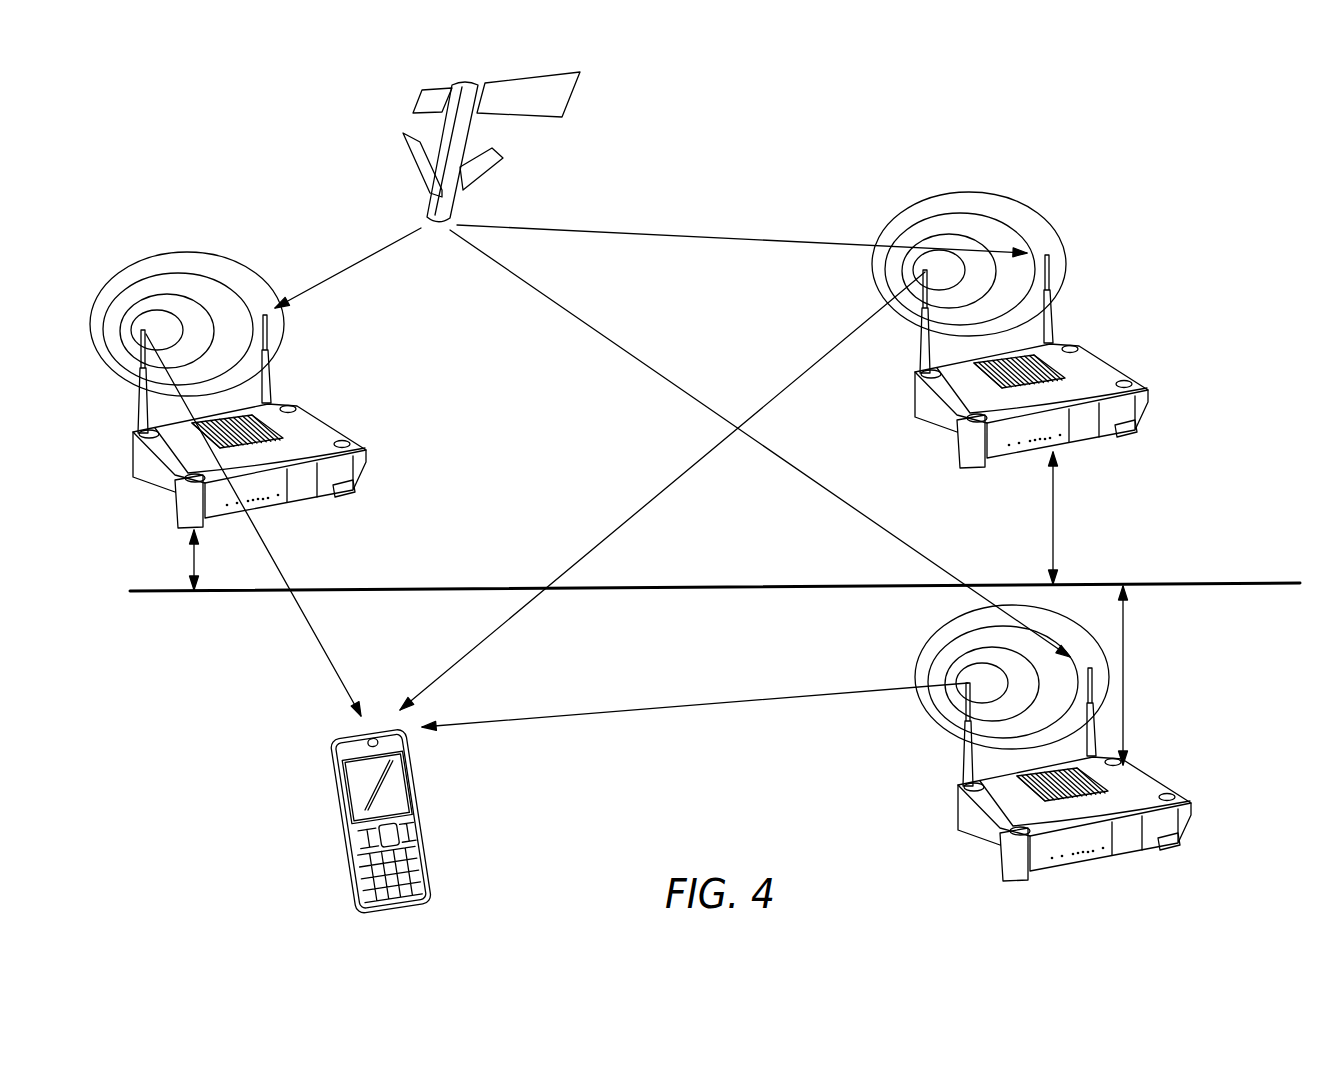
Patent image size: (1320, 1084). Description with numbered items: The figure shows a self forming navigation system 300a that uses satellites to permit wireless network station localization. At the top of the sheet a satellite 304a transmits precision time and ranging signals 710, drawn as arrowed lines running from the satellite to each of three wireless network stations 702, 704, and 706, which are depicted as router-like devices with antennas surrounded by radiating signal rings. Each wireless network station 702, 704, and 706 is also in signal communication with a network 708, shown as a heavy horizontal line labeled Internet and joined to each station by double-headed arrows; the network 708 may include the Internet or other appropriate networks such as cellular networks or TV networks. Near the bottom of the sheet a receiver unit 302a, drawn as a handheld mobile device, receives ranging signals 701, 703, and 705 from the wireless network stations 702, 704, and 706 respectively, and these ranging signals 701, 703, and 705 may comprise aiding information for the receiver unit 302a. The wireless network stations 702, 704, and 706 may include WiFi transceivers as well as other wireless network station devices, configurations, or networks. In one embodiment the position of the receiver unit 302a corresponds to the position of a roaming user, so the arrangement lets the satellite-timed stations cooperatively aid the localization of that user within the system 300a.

The self forming navigation system 300a is at (247, 172).
The satellite 304a is at (576, 92).
The receiver unit 302a is at (418, 788).
The wireless network station 702 is at (305, 502).
The wireless network station 704 is at (1085, 438).
The wireless network station 706 is at (1128, 848).
The network 708 is at (1268, 586).
The ranging signal 701 is at (313, 634).
The ranging signal 703 is at (600, 543).
The ranging signal 705 is at (605, 712).
The precision time and ranging signals 710 is at (358, 263).